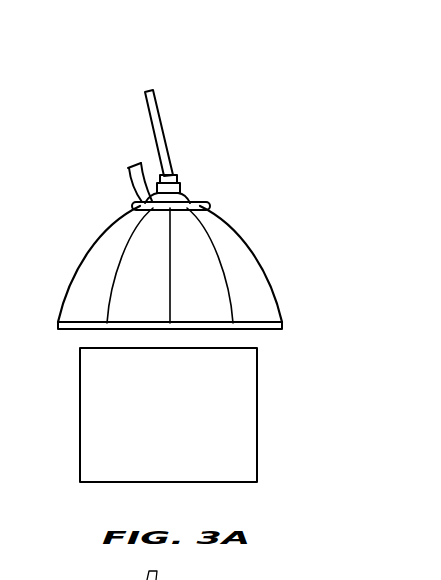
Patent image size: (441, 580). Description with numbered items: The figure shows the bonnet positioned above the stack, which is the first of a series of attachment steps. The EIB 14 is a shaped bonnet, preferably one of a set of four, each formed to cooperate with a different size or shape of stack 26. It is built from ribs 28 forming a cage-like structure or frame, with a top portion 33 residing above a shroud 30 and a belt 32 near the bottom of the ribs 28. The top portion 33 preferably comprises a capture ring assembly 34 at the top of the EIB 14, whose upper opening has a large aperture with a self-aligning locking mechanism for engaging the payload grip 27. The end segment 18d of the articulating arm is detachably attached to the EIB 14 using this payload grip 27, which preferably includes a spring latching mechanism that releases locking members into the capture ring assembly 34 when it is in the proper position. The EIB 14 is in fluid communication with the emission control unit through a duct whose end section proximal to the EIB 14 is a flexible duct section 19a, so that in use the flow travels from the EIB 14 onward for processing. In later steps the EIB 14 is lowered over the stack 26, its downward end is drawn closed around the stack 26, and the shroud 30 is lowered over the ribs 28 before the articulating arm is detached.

The EIB 14 is at (304, 202).
The end segment 18d is at (157, 118).
The flexible duct section 19a is at (134, 183).
The stack 26 is at (233, 435).
The payload grip 27 is at (177, 176).
The ribs 28 is at (68, 290).
The shroud 30 is at (211, 206).
The belt 32 is at (248, 332).
The top portion 33 is at (191, 198).
The capture ring assembly 34 is at (180, 188).